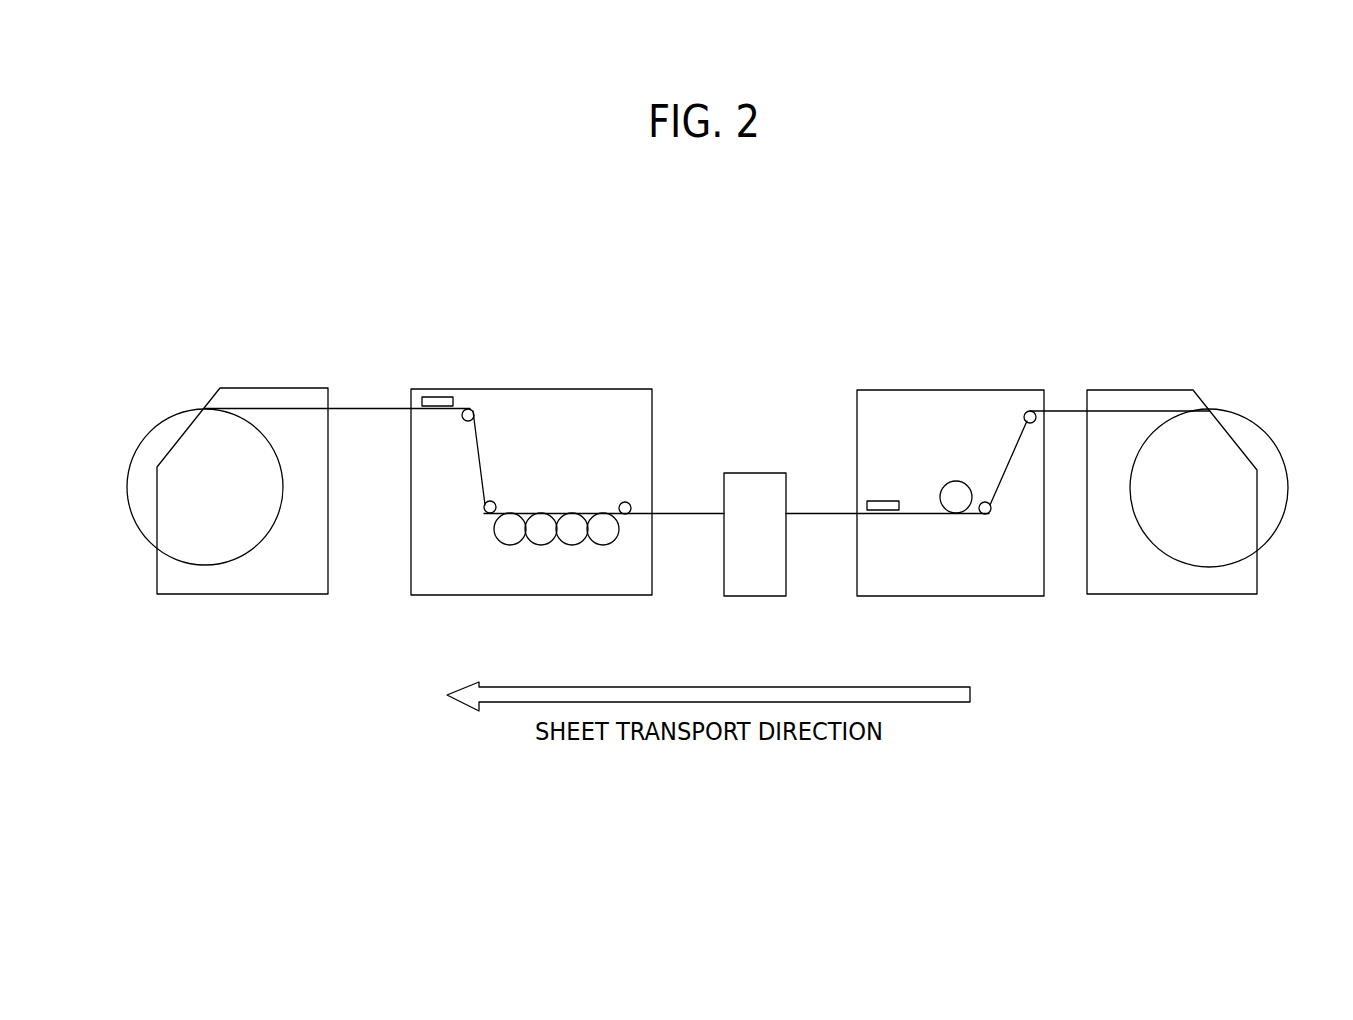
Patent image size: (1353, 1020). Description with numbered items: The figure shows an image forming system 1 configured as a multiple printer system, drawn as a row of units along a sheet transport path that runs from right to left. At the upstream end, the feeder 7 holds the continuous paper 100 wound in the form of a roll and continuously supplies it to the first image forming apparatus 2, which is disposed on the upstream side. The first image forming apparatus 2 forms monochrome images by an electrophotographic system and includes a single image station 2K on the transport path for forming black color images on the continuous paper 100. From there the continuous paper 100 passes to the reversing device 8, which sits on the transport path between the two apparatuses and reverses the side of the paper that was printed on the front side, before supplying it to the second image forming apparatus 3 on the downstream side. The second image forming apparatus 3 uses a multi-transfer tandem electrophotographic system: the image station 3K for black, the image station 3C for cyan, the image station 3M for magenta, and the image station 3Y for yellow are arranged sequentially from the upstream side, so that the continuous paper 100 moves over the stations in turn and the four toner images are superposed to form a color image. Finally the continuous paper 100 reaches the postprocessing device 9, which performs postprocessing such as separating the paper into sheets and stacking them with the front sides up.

The image forming system 1 is at (1176, 250).
The postprocessing device 9 is at (302, 387).
The second image forming apparatus 3 is at (595, 388).
The image station 3Y is at (504, 492).
The image station 3M is at (536, 492).
The image station 3C is at (568, 492).
The image station 3K is at (599, 492).
The reversing device 8 is at (754, 473).
The first image forming apparatus 2 is at (985, 389).
The image station 2K is at (954, 462).
The continuous paper 100 is at (1065, 410).
The feeder 7 is at (1165, 388).